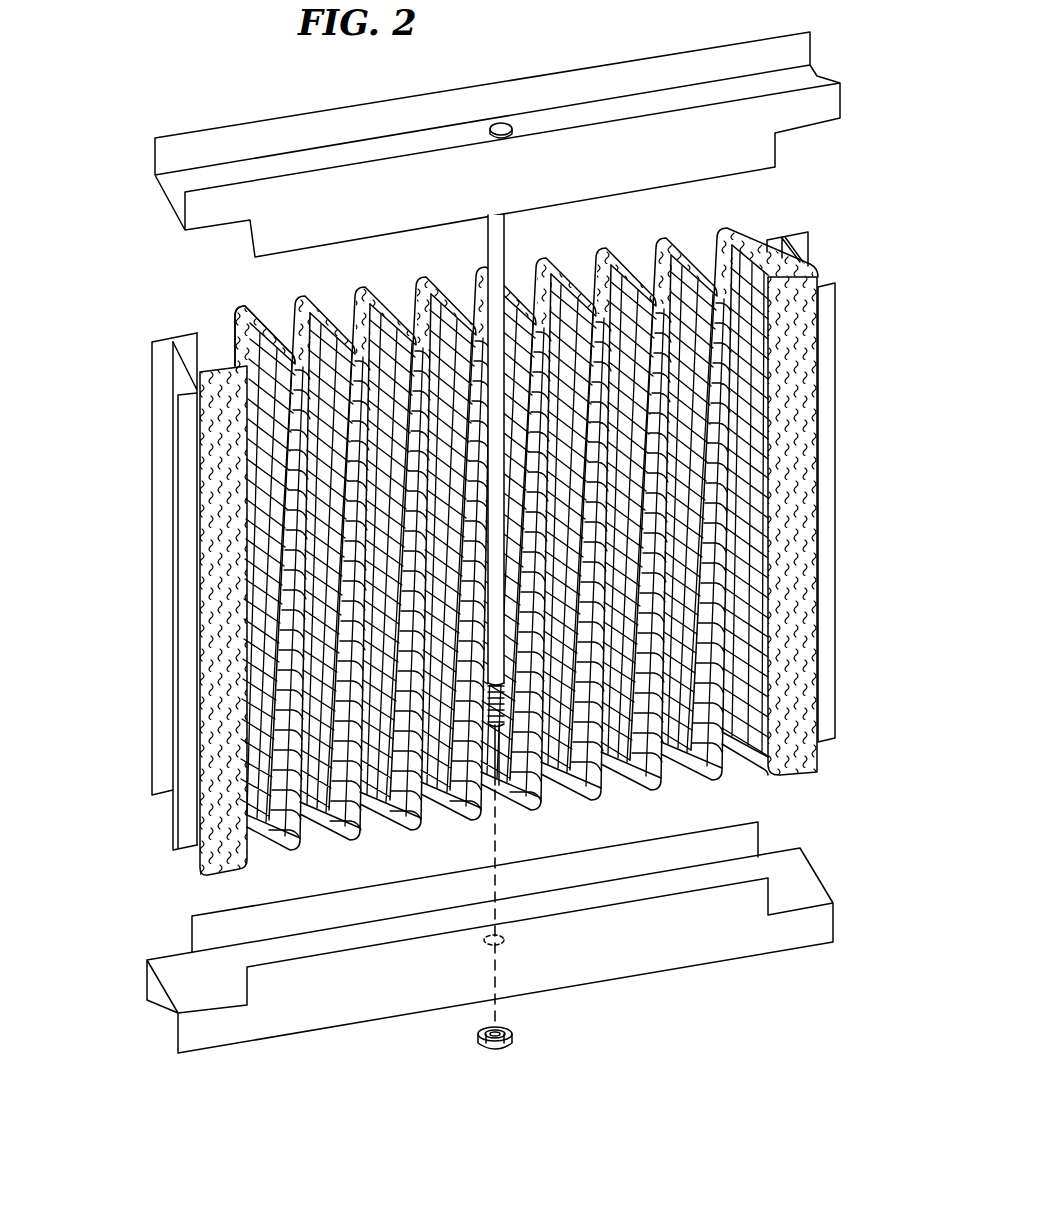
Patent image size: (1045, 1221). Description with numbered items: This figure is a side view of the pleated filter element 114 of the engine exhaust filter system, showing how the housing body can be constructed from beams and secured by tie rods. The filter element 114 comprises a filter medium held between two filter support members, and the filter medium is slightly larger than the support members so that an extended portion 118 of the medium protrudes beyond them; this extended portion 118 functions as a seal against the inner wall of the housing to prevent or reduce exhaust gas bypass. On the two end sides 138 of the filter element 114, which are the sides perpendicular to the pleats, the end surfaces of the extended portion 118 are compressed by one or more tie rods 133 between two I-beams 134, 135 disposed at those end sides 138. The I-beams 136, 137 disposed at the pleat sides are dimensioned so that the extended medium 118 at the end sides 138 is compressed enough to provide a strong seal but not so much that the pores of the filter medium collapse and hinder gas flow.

The pleated filter element 114 is at (760, 553).
The extended portion of the filter medium 118 is at (562, 268).
The tie rod 133 is at (505, 127).
The I-beam 134 is at (790, 48).
The I-beam 135 is at (738, 940).
The I-beam 136 is at (160, 415).
The I-beam 137 is at (832, 297).
The end side 138 is at (237, 303).